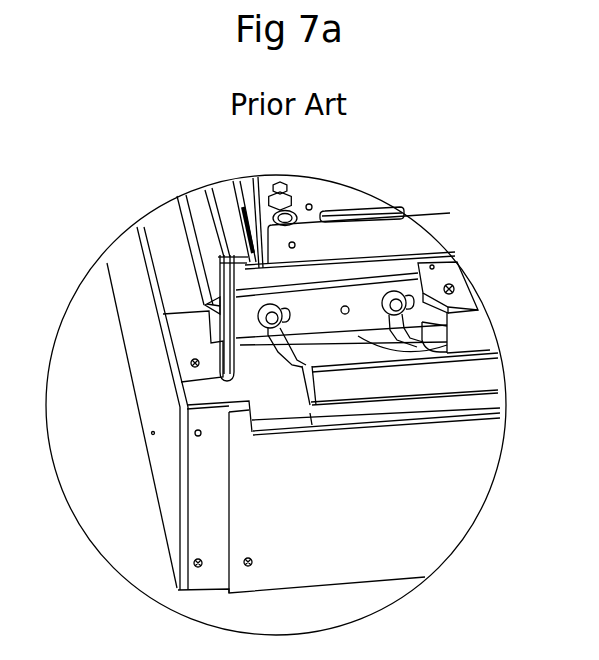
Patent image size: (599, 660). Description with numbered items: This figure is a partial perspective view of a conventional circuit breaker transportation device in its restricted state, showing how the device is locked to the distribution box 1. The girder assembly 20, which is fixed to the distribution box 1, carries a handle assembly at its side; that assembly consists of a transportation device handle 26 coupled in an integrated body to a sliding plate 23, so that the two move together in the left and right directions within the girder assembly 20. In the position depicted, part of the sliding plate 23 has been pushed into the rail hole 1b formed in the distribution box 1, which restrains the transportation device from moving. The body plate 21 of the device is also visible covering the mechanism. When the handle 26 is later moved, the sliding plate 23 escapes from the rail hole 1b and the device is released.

The distribution box 1 is at (155, 220).
The rail hole 1b is at (217, 308).
The sliding plate 23 is at (210, 305).
The body plate 21 is at (360, 297).
The girder assembly 20 is at (455, 275).
The transportation device handle 26 is at (447, 338).